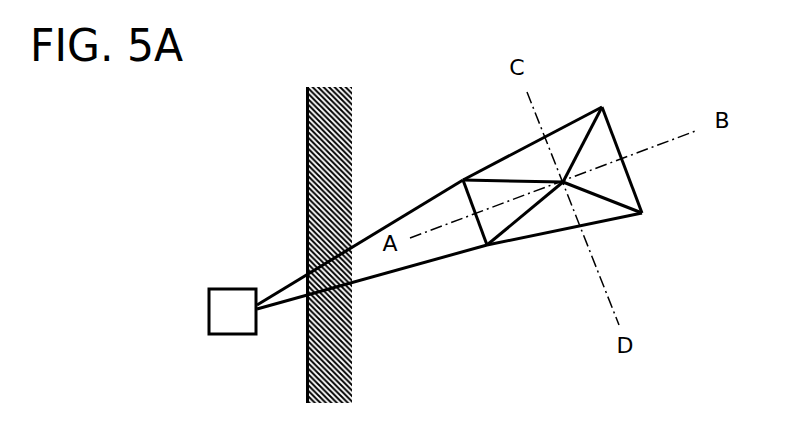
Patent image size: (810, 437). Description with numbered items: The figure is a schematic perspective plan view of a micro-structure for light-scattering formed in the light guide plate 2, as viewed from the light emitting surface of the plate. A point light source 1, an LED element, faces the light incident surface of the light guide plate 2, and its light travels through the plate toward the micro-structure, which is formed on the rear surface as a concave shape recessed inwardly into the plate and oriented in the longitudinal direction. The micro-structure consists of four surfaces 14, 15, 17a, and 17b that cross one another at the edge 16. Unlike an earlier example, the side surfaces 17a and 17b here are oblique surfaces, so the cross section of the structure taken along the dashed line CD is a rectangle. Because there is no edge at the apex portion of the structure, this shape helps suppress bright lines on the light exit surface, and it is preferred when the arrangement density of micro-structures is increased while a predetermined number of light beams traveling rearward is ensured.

The point light source 1 is at (206, 300).
The light guide plate 2 is at (372, 148).
The surface 14 is at (497, 207).
The surface 15 is at (617, 192).
The edge 16 is at (540, 181).
The side surface 17a is at (540, 168).
The side surface 17b is at (538, 228).